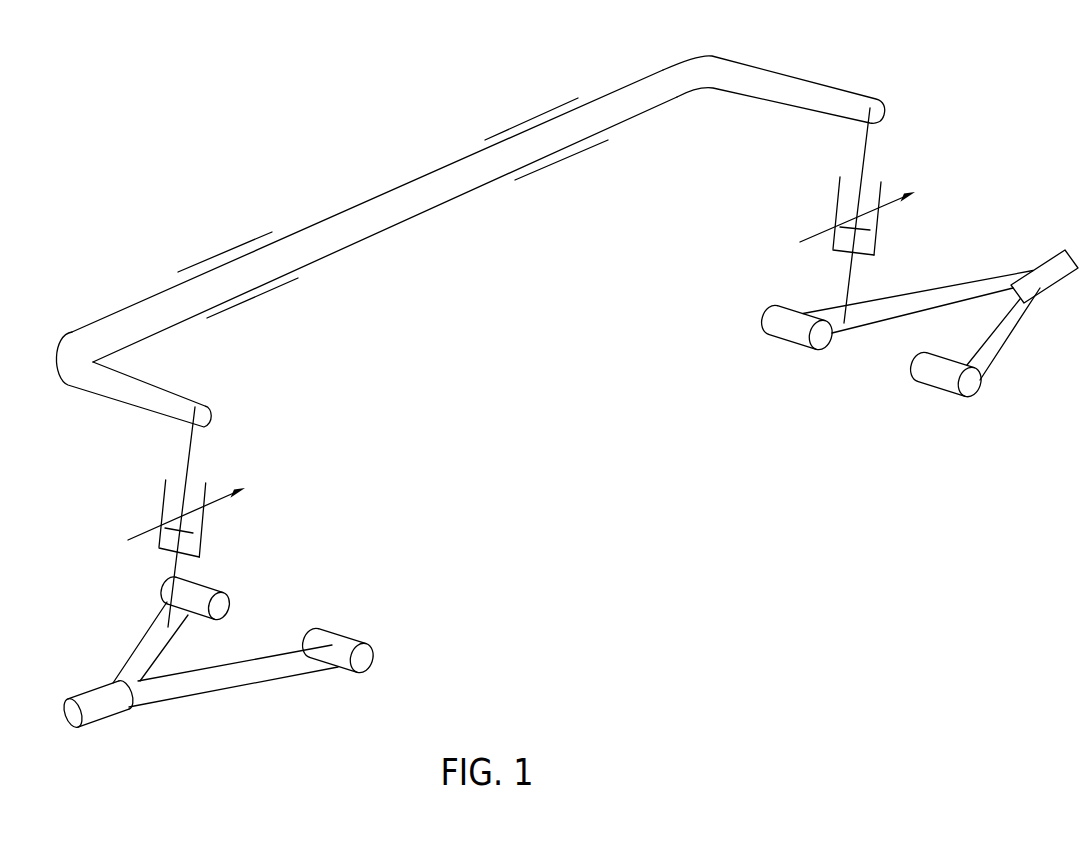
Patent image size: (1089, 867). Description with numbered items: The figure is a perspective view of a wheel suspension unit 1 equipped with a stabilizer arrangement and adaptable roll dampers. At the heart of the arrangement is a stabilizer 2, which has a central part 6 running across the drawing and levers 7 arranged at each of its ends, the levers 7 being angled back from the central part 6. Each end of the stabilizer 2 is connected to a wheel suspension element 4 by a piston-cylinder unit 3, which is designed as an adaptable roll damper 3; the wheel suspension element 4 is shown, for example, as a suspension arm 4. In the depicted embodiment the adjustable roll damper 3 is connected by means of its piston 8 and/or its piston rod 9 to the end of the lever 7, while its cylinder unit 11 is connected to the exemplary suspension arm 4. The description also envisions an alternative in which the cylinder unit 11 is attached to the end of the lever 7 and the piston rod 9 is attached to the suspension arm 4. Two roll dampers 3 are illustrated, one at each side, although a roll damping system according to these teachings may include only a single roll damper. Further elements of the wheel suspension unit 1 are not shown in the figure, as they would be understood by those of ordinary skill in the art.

The wheel suspension unit 1 is at (310, 97).
The stabilizer 2 is at (428, 211).
The piston-cylinder unit 3 is at (207, 546).
The wheel suspension element 4 is at (420, 664).
The central part 6 is at (403, 186).
The lever 7 is at (120, 400).
The piston 8 is at (165, 547).
The piston rod 9 is at (193, 450).
The cylinder unit 11 is at (166, 590).